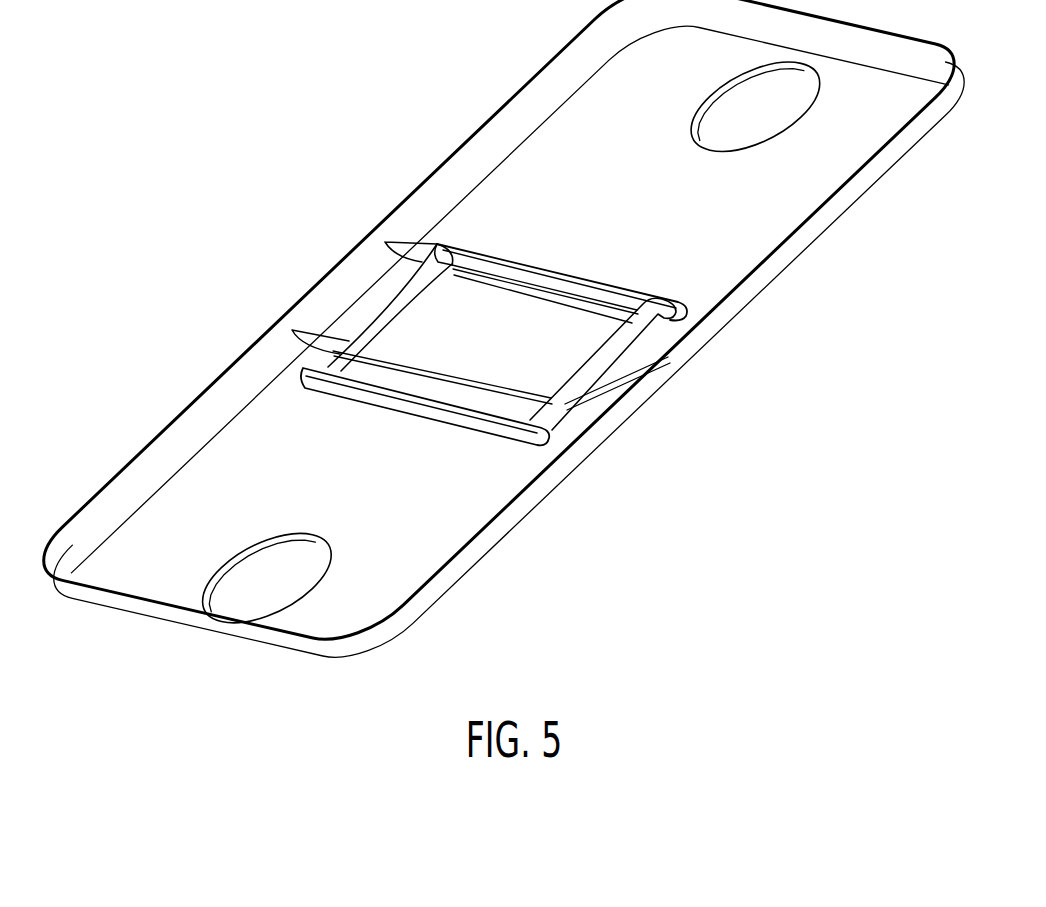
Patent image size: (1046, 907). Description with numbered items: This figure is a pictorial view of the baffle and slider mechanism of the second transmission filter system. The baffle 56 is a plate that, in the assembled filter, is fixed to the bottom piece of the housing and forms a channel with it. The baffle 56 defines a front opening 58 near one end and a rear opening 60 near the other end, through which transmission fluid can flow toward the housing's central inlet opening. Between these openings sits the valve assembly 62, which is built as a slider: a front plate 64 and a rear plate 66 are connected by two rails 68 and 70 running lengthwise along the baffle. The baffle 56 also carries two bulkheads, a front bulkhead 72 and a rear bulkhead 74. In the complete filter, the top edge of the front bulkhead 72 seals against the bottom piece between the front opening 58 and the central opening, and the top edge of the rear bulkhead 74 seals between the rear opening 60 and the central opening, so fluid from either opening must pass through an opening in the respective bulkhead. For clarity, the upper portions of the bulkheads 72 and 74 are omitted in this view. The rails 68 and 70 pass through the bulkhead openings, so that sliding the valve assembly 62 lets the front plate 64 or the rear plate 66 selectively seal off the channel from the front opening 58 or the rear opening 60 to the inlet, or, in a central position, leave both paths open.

The baffle 56 is at (733, 294).
The front opening 58 is at (310, 531).
The rear opening 60 is at (710, 150).
The valve assembly 62 is at (475, 353).
The front plate 64 is at (350, 391).
The rear plate 66 is at (506, 258).
The rail 68 is at (378, 313).
The rail 70 is at (598, 368).
The front bulkhead 72 is at (421, 362).
The rear bulkhead 74 is at (557, 297).